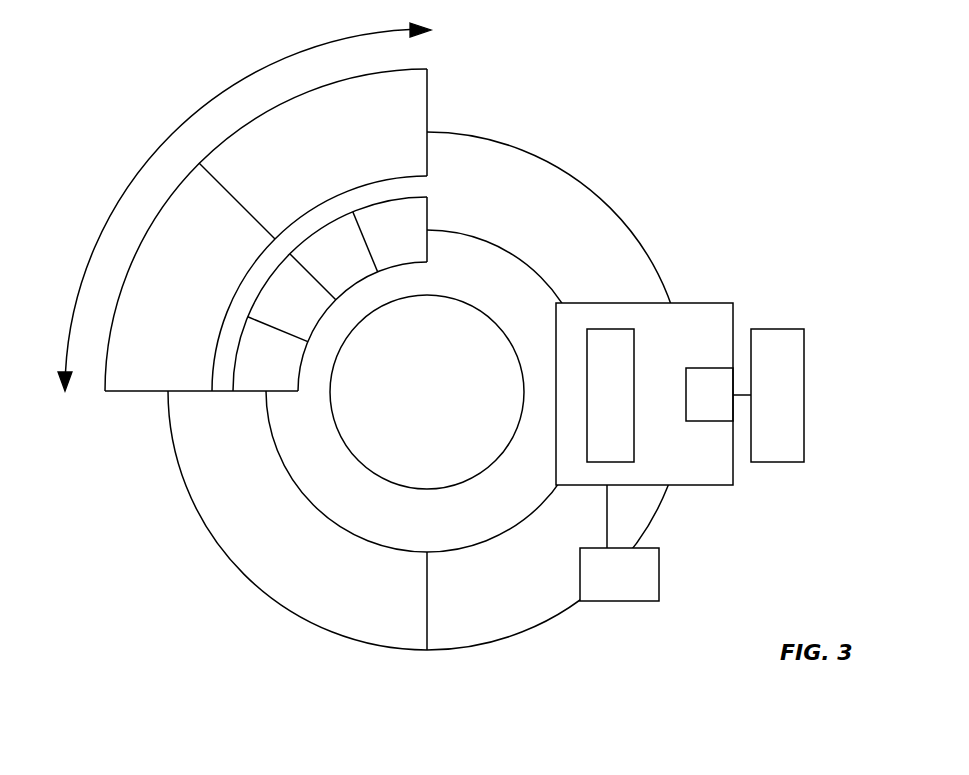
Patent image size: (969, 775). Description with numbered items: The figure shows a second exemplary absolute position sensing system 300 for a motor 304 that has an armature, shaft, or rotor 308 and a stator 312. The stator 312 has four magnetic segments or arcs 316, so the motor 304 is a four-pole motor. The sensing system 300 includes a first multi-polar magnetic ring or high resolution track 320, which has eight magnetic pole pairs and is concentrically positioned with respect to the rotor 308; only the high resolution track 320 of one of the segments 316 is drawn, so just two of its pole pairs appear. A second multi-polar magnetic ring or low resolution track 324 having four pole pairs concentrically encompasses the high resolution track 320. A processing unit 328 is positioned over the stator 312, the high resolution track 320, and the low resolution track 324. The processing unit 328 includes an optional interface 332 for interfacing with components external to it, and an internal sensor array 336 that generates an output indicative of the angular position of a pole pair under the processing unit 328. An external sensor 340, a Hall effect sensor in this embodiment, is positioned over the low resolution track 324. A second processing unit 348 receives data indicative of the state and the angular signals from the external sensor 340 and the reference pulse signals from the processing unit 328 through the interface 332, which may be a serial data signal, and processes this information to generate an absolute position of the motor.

The second absolute position sensing system 300 is at (478, 374).
The motor 304 is at (427, 416).
The rotor 308 is at (413, 303).
The stator 312 is at (246, 578).
The magnetic segments 316 is at (256, 390).
The high resolution track 320 is at (268, 391).
The low resolution track 324 is at (157, 391).
The processing unit 328 is at (667, 372).
The interface 332 is at (687, 388).
The internal sensor array 336 is at (635, 360).
The external sensor 340 is at (659, 573).
The second processing unit 348 is at (805, 329).